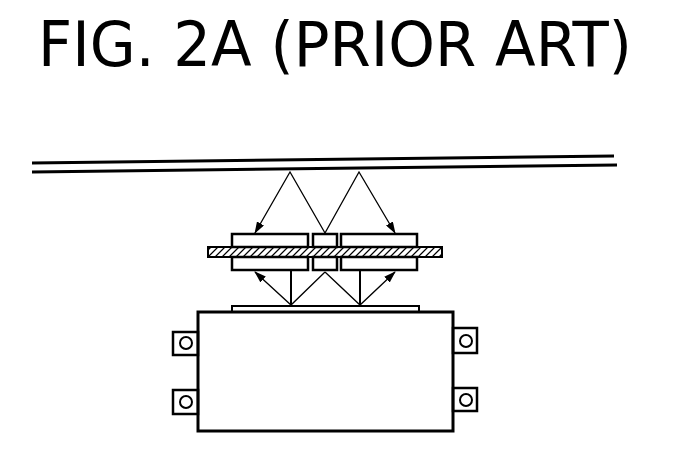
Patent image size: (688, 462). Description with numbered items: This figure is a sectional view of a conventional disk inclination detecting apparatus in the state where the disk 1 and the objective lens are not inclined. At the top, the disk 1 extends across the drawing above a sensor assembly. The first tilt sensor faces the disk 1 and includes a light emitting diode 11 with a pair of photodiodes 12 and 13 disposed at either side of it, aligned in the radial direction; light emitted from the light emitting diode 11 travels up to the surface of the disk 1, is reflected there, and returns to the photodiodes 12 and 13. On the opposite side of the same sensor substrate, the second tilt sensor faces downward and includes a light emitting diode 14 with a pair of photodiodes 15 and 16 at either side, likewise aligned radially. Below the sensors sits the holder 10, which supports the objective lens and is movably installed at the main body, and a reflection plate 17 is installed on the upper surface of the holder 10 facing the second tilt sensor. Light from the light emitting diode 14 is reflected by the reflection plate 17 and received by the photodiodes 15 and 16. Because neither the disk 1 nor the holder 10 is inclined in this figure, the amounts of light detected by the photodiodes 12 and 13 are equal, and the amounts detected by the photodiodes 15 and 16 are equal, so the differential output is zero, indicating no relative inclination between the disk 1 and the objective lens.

The disk 1 is at (135, 174).
The holder 10 is at (453, 365).
The light emitting diode 11 is at (328, 232).
The photodiode 12 is at (417, 238).
The photodiode 13 is at (232, 240).
The light emitting diode 14 is at (323, 273).
The photodiode 15 is at (232, 263).
The photodiode 16 is at (418, 265).
The reflection plate 17 is at (419, 307).